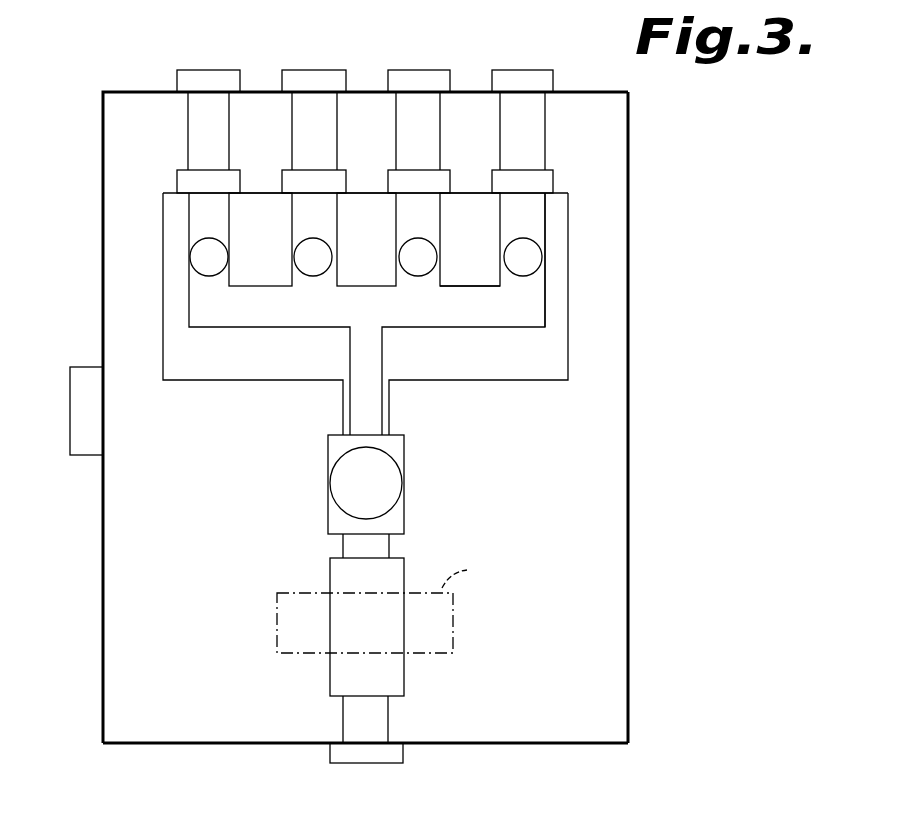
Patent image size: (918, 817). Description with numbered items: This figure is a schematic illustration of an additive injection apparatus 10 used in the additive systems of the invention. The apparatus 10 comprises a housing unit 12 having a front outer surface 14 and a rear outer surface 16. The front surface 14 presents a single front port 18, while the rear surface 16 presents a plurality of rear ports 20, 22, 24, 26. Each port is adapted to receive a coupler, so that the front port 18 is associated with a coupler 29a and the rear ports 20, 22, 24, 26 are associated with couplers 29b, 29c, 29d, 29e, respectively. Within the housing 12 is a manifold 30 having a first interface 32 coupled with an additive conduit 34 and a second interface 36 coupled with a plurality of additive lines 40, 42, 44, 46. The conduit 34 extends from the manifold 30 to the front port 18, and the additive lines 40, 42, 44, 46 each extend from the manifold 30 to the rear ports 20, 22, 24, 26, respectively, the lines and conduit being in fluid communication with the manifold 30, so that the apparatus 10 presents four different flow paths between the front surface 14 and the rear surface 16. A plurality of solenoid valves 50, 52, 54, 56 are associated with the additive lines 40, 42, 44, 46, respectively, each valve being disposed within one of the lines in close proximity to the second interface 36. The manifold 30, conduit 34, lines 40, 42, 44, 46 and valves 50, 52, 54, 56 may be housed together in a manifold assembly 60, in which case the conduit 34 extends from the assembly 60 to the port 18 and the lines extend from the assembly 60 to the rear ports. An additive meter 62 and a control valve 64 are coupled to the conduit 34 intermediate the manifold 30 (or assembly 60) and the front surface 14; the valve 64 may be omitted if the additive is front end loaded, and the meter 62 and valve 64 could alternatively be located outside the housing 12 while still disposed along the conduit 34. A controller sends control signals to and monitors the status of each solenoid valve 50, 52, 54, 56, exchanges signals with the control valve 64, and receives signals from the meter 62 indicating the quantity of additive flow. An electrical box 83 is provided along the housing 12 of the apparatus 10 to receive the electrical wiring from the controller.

The additive injection apparatus 10 is at (384, 417).
The housing unit 12 is at (630, 546).
The front outer surface 14 is at (548, 743).
The rear outer surface 16 is at (122, 92).
The front port 18 is at (352, 742).
The rear port 20 is at (188, 95).
The rear port 22 is at (292, 95).
The rear port 24 is at (428, 95).
The rear port 26 is at (533, 95).
The coupler 29a is at (372, 765).
The coupler 29b is at (198, 70).
The coupler 29c is at (324, 70).
The coupler 29d is at (430, 70).
The coupler 29e is at (560, 50).
The manifold 30 is at (189, 315).
The first interface 32 is at (445, 330).
The additive conduit 34 is at (343, 360).
The second interface 36 is at (490, 288).
The additive line 40 is at (232, 238).
The additive line 42 is at (337, 224).
The additive line 44 is at (440, 226).
The additive line 46 is at (545, 205).
The solenoid valve 50 is at (212, 276).
The solenoid valve 52 is at (315, 276).
The solenoid valve 54 is at (421, 276).
The solenoid valve 56 is at (536, 270).
The manifold assembly 60 is at (523, 382).
The additive meter 62 is at (403, 473).
The control valve 64 is at (281, 590).
The electrical box 83 is at (70, 367).